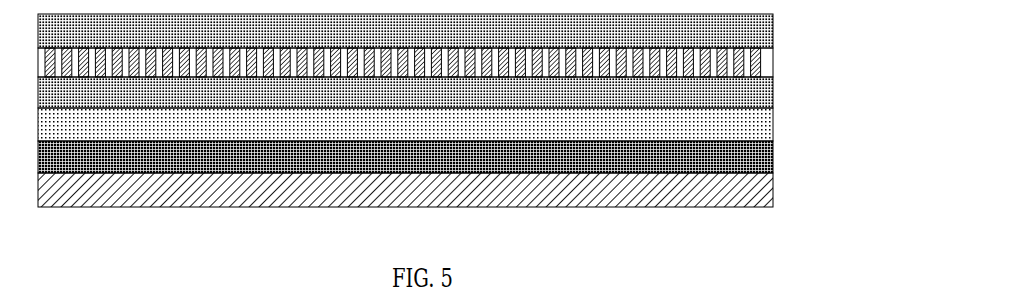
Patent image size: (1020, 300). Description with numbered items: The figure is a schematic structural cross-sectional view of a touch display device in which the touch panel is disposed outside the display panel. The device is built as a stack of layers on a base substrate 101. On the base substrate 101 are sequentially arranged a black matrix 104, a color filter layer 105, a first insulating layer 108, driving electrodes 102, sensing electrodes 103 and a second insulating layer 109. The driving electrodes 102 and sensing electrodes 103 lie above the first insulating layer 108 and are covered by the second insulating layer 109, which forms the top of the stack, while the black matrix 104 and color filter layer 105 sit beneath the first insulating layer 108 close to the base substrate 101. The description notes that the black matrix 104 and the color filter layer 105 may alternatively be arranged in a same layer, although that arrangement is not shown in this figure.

The base substrate 101 is at (758, 187).
The black matrix 104 is at (773, 161).
The color filter layer 105 is at (748, 132).
The first insulating layer 108 is at (753, 91).
The driving electrodes 102 is at (758, 48).
The sensing electrodes 103 is at (760, 70).
The second insulating layer 109 is at (748, 28).